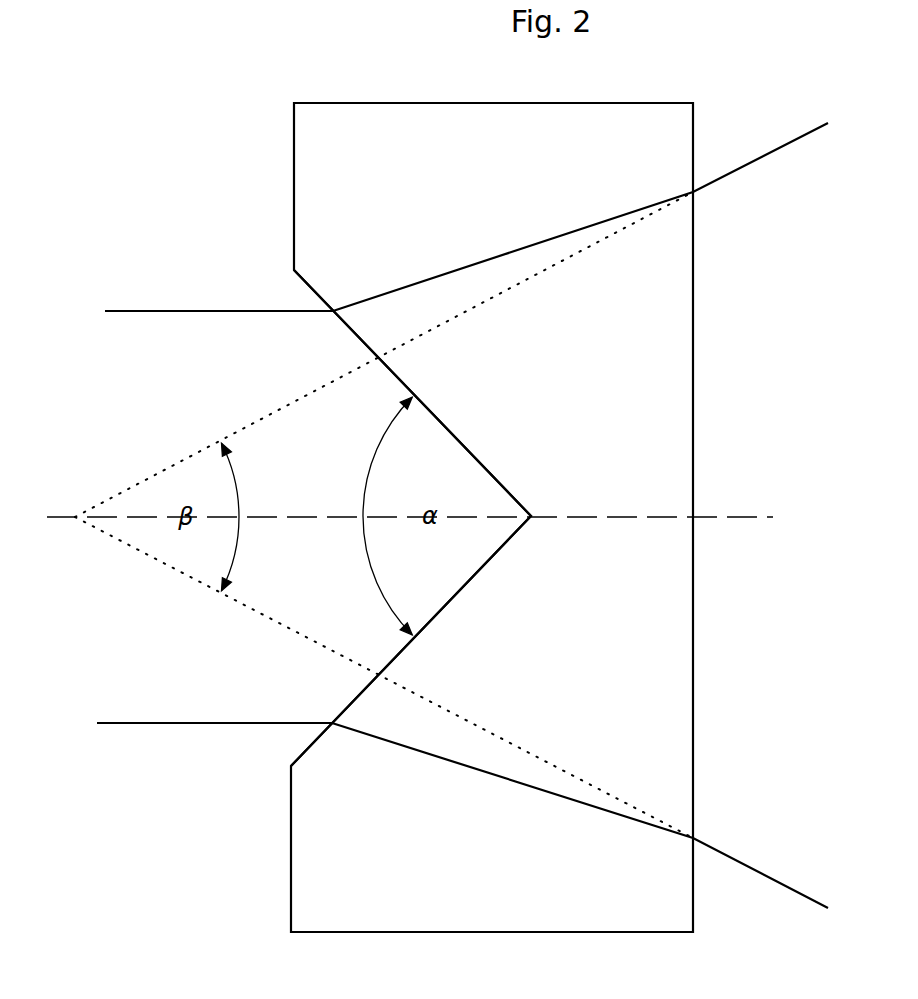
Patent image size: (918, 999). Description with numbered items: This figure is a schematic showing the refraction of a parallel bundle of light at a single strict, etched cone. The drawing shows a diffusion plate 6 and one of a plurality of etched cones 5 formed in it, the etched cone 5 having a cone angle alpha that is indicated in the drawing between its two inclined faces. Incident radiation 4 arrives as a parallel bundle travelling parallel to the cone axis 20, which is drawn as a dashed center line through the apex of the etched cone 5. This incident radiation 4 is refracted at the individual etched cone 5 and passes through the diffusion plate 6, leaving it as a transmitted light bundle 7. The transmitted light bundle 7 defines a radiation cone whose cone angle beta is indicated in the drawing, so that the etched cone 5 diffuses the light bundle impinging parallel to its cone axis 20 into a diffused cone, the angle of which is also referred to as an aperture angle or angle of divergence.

The incident radiation 4 is at (188, 310).
The etched cone 5 is at (358, 332).
The diffusion plate 6 is at (489, 170).
The transmitted light bundle 7 is at (773, 150).
The cone axis 20 is at (740, 516).